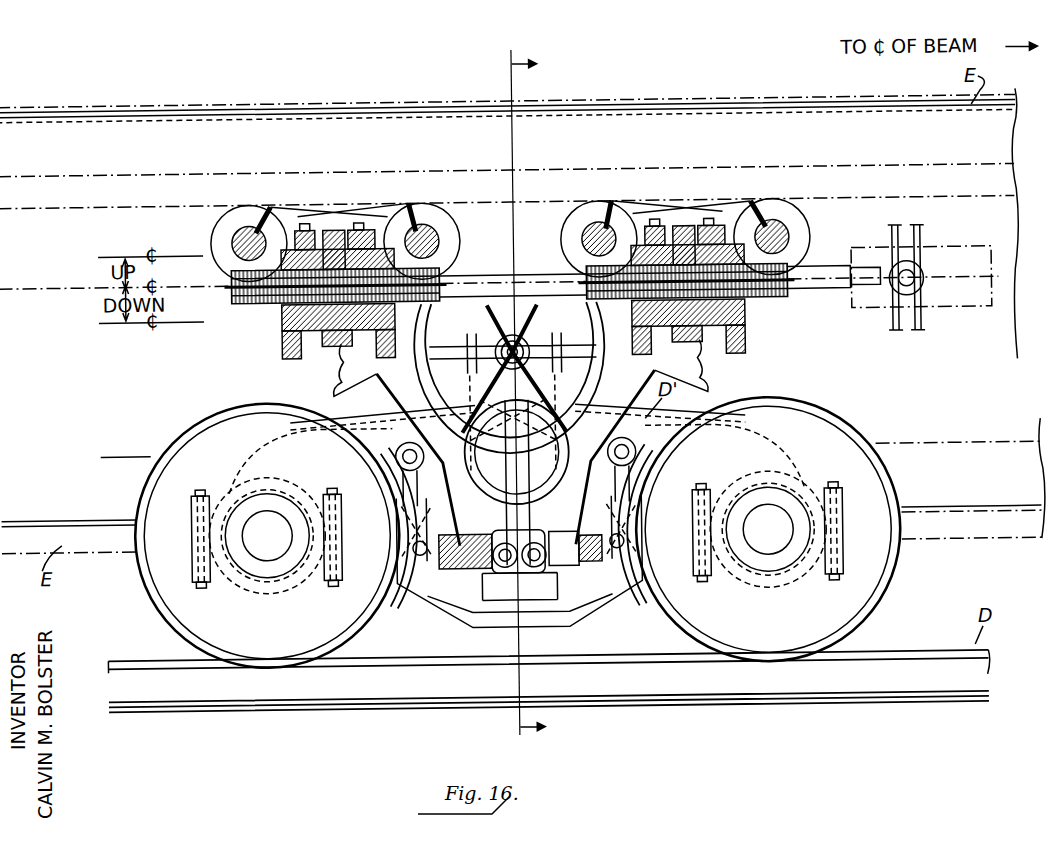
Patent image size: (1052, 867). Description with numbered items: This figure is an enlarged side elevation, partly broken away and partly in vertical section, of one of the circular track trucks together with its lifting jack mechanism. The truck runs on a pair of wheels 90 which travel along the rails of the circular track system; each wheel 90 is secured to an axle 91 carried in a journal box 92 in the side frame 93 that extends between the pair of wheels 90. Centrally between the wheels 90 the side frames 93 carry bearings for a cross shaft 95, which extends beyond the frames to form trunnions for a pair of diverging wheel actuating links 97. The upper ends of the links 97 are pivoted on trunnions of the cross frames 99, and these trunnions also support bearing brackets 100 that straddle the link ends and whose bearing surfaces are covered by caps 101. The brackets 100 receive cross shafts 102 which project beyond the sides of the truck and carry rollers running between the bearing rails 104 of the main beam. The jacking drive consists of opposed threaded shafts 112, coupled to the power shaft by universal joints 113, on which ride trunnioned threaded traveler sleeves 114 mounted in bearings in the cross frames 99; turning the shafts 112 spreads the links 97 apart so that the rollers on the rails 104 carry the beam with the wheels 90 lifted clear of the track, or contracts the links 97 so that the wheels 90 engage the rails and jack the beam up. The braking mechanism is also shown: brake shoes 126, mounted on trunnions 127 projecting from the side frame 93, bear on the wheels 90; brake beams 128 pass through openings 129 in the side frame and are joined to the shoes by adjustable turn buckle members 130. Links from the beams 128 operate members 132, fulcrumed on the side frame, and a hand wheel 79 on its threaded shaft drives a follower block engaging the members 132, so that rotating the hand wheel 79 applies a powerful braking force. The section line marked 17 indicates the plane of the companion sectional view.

The section line 17- 17 is at (544, 394).
The hand wheel 79 is at (430, 342).
The wheel 90 is at (200, 620).
The axle 91 is at (518, 533).
The journal box 92 is at (270, 590).
The side frame 93 is at (370, 414).
The cross shaft 95 is at (560, 472).
The wheel actuating link 97 is at (370, 356).
The cross frame 99 is at (284, 352).
The bearing bracket 100 is at (335, 228).
The cap 101 is at (420, 196).
The cross shaft 102 is at (252, 222).
The bearing rail 104 is at (193, 196).
The threaded shaft 112 is at (482, 275).
The universal joint 113 is at (955, 262).
The traveler sleeve 114 is at (268, 303).
The brake shoe 126 is at (418, 605).
The trunnion 127 is at (405, 457).
The brake beam 128 is at (505, 580).
The opening 129 is at (523, 590).
The turn buckle member 130 is at (462, 568).
The member 132 is at (517, 415).